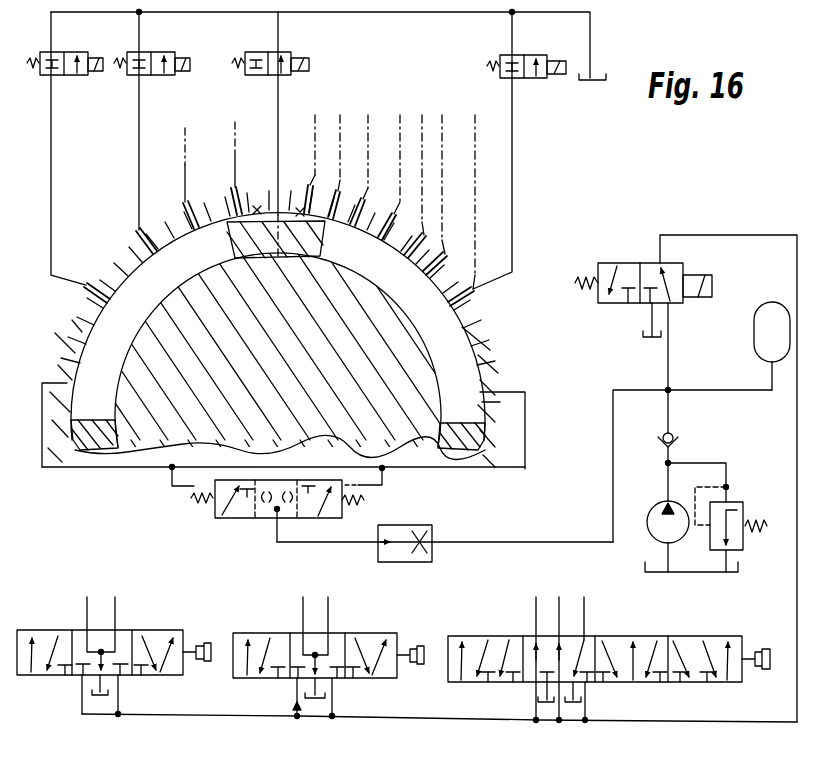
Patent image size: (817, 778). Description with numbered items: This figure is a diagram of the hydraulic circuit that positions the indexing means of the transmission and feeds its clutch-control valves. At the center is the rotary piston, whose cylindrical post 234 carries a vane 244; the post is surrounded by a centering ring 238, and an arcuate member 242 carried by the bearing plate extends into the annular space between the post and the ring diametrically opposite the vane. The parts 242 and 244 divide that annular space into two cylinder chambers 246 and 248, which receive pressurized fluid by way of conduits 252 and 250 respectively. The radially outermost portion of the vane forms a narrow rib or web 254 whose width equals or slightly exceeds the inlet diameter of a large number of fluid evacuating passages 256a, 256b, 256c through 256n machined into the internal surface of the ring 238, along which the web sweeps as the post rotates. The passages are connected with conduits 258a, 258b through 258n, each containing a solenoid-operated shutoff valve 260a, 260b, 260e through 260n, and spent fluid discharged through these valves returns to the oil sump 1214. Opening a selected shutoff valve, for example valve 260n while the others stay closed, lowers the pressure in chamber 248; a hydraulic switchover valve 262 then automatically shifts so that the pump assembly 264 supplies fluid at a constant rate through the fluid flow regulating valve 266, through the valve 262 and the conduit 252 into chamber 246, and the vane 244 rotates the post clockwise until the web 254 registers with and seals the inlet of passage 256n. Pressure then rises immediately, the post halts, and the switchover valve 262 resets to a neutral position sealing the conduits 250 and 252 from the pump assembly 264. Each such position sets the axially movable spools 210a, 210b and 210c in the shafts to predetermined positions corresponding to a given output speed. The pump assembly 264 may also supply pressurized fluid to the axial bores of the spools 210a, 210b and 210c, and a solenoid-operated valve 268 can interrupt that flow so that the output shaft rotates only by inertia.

The oil sump 1214 is at (598, 86).
The shutoff valve 260a is at (77, 78).
The shutoff valve 260b is at (165, 78).
The shutoff valve 260e is at (263, 80).
The shutoff valve 260n is at (547, 82).
The conduit 258a is at (72, 173).
The conduit 258b is at (141, 186).
The conduit 258n is at (513, 193).
The rib or web 254 is at (266, 200).
The fluid evacuating passage 256a is at (105, 300).
The fluid evacuating passage 256b is at (147, 252).
The fluid evacuating passage 256c is at (190, 228).
The fluid evacuating passage 256n is at (460, 300).
The cylinder chamber 246 is at (93, 362).
The vane 244 is at (320, 232).
The cylindrical post 234 is at (372, 298).
The conduit 252 is at (60, 382).
The arcuate member 242 is at (463, 440).
The centering ring 238 is at (467, 333).
The cylinder chamber 248 is at (447, 363).
The conduit 250 is at (497, 382).
The hydraulic switchover valve 262 is at (248, 518).
The fluid flow regulating valve 266 is at (432, 558).
The solenoid-operated valve 268 is at (607, 270).
The pump assembly 264 is at (733, 475).
The valve member or spool 210a is at (157, 640).
The valve member or spool 210b is at (372, 643).
The valve member or spool 210c is at (680, 650).